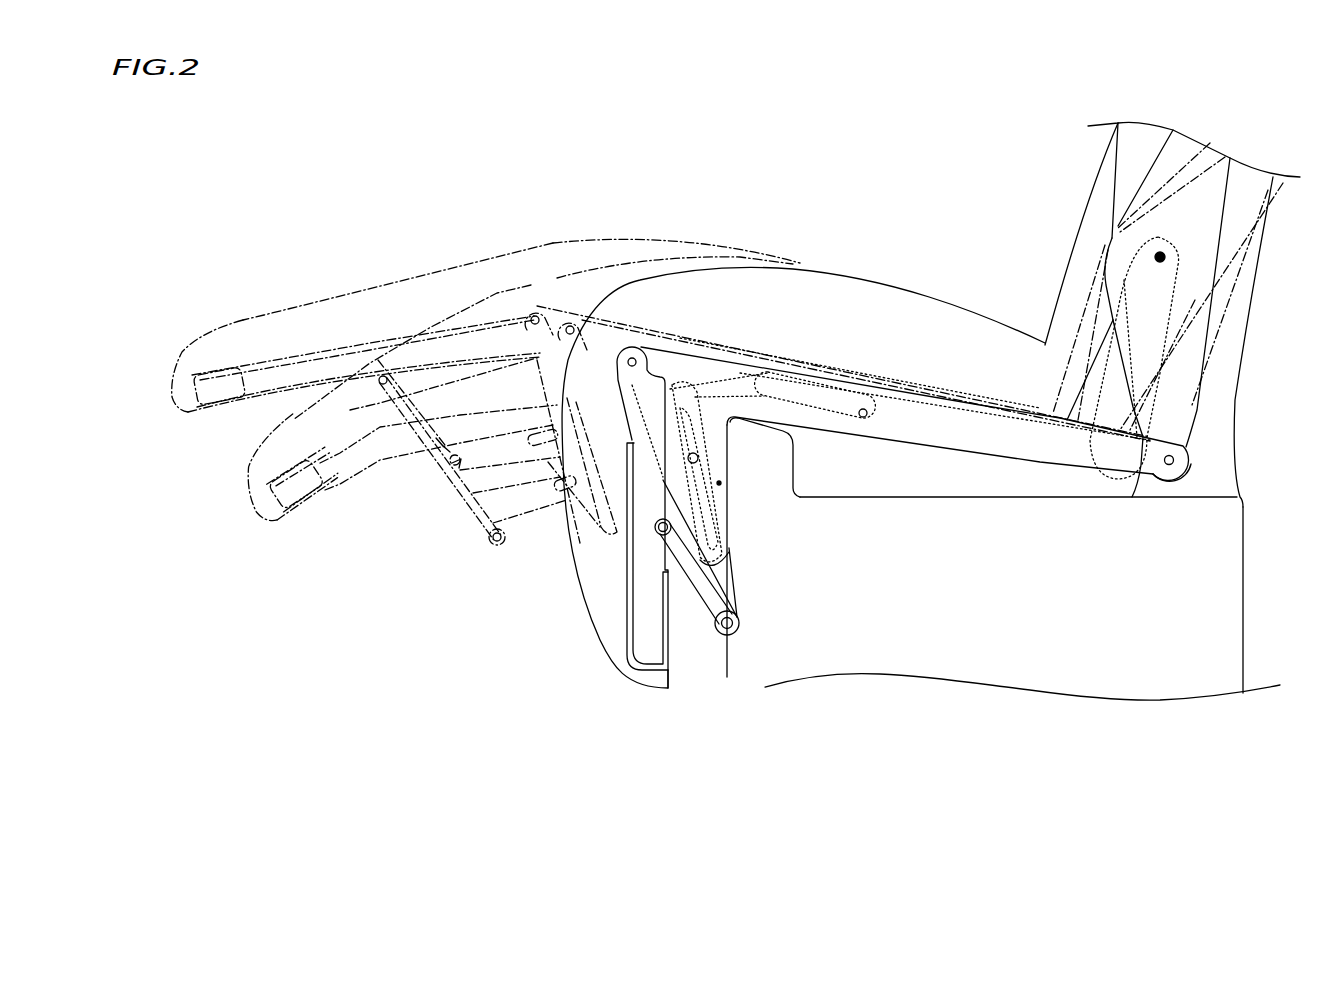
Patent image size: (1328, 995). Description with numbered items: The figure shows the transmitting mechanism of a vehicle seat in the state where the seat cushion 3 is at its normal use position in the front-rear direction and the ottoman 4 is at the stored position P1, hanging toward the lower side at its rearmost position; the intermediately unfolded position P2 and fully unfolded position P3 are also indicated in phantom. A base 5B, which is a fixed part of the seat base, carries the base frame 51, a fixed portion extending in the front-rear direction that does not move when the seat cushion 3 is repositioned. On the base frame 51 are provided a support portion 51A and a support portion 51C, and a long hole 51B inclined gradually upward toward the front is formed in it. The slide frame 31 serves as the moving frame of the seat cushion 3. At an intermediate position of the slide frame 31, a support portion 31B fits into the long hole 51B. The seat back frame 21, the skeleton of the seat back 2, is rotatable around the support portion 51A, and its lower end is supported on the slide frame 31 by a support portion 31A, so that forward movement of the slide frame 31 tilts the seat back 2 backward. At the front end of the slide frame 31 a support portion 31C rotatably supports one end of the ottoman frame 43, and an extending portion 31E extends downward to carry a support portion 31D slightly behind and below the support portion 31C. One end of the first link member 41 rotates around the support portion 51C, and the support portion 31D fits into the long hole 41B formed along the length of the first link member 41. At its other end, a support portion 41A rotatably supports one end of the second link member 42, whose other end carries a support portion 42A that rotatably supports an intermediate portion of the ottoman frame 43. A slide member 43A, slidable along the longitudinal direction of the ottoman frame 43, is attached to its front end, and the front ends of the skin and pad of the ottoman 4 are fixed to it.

The seat back 2 is at (1105, 187).
The seat back frame 21 is at (1197, 233).
The support portion 51A is at (1168, 263).
The seat cushion 3 is at (883, 308).
The slide frame 31 is at (963, 430).
The support portion 31A is at (1185, 459).
The support portion 31B is at (869, 406).
The support portion 31C is at (632, 350).
The support portion 31D is at (709, 457).
The extending portion 31E is at (720, 483).
The base frame 51 is at (1022, 480).
The long hole 51B is at (821, 390).
The support portion 51C is at (684, 390).
The ottoman 4 is at (603, 608).
The first link member 41 is at (720, 580).
The support portion 41A is at (727, 639).
The long hole 41B is at (722, 527).
The second link member 42 is at (687, 560).
The support portion 42A is at (653, 532).
The ottoman frame 43 is at (650, 632).
The slide member 43A is at (626, 623).
The base 5B is at (960, 613).
The stored position P1 is at (608, 682).
The intermediately unfolded position P2 is at (271, 522).
The fully unfolded position P3 is at (187, 414).